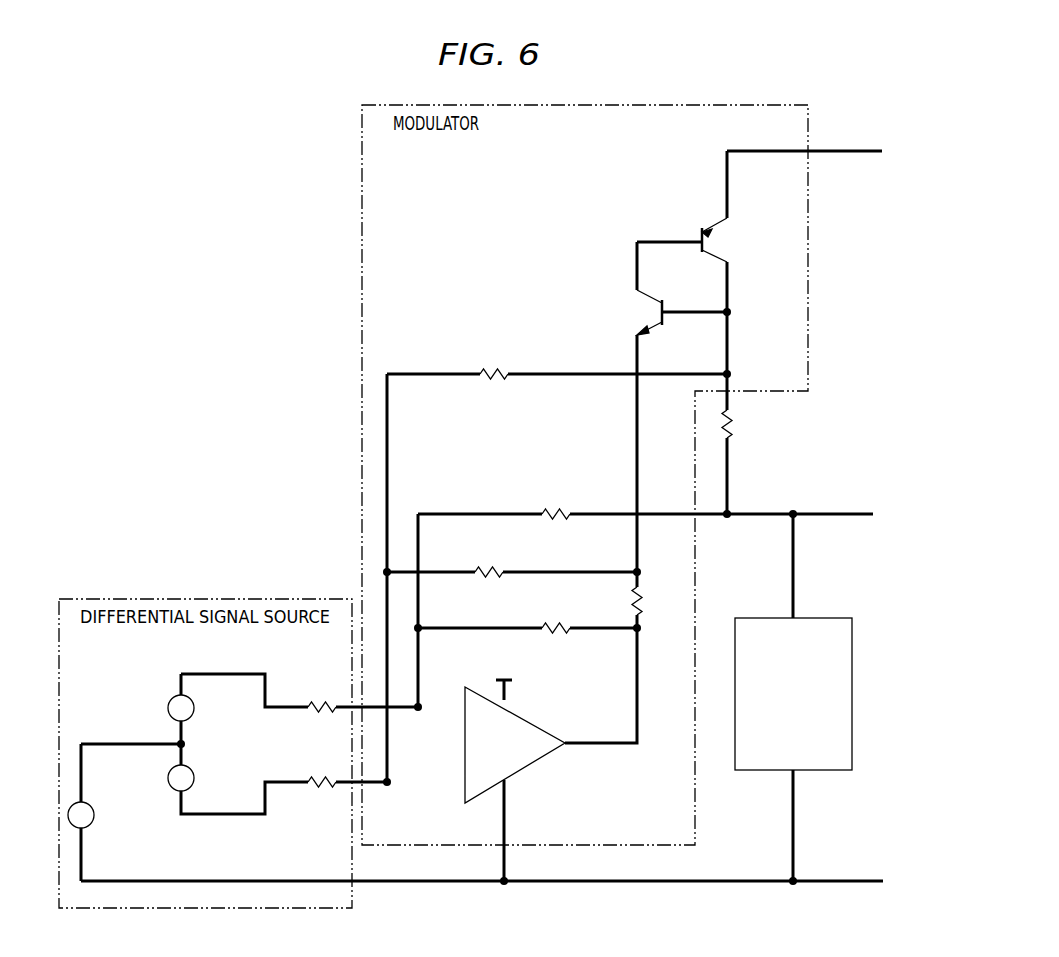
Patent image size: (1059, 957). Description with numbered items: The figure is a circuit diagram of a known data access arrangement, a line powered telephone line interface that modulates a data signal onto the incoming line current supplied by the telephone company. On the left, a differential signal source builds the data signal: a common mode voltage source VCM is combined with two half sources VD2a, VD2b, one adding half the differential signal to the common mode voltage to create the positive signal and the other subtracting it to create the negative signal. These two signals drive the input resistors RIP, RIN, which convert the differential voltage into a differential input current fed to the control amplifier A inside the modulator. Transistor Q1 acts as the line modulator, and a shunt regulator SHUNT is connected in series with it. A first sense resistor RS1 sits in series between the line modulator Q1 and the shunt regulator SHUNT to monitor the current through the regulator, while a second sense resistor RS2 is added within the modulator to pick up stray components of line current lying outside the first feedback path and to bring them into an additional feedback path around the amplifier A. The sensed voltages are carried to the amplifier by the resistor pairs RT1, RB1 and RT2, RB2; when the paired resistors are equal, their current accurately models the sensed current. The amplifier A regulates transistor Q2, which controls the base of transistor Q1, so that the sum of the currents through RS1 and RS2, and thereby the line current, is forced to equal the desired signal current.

The line modulator transistor Q1 is at (721, 240).
The control transistor Q2 is at (626, 283).
The first sense feedback resistor RT1 is at (492, 352).
The second sense feedback resistor RT2 is at (490, 591).
The first sense feedback resistor RB1 is at (557, 534).
The second sense feedback resistor RB2 is at (557, 648).
The first sense resistor RS1 is at (746, 422).
The second sense resistor RS2 is at (656, 599).
The positive input resistor RIP is at (321, 686).
The negative input resistor RIN is at (321, 800).
The control amplifier A is at (515, 728).
The shunt regulator SHUNT is at (793, 694).
The half differential signal source VD2a is at (202, 710).
The half differential signal source VD2b is at (202, 781).
The common mode voltage source VCM is at (99, 812).